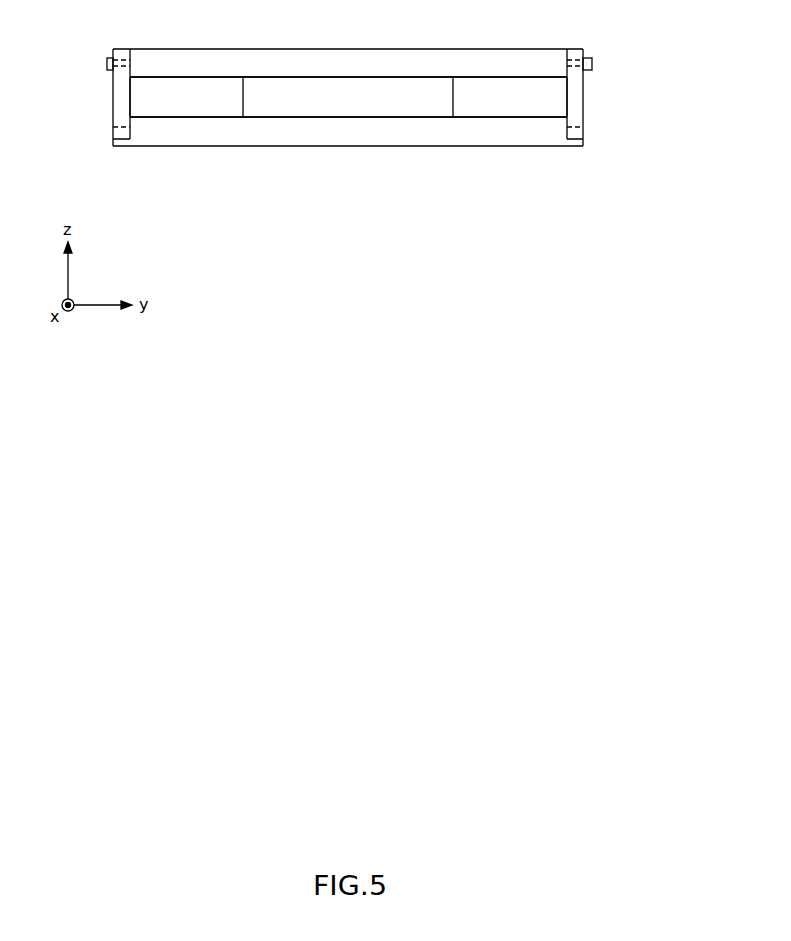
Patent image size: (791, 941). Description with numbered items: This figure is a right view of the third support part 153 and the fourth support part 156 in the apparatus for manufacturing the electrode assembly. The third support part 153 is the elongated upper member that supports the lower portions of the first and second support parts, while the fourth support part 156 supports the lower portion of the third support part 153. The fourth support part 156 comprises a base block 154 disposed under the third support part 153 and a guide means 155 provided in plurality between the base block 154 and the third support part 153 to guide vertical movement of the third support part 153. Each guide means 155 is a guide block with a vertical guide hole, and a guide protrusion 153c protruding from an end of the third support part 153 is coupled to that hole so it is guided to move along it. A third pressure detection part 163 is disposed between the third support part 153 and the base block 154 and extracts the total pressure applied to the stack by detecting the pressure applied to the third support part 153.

The third support part 153 is at (492, 62).
The guide protrusion 153c is at (592, 63).
The base block 154 is at (494, 133).
The guide means 155 is at (584, 95).
The fourth support part 156 is at (388, 141).
The third pressure detection part 163 is at (348, 100).